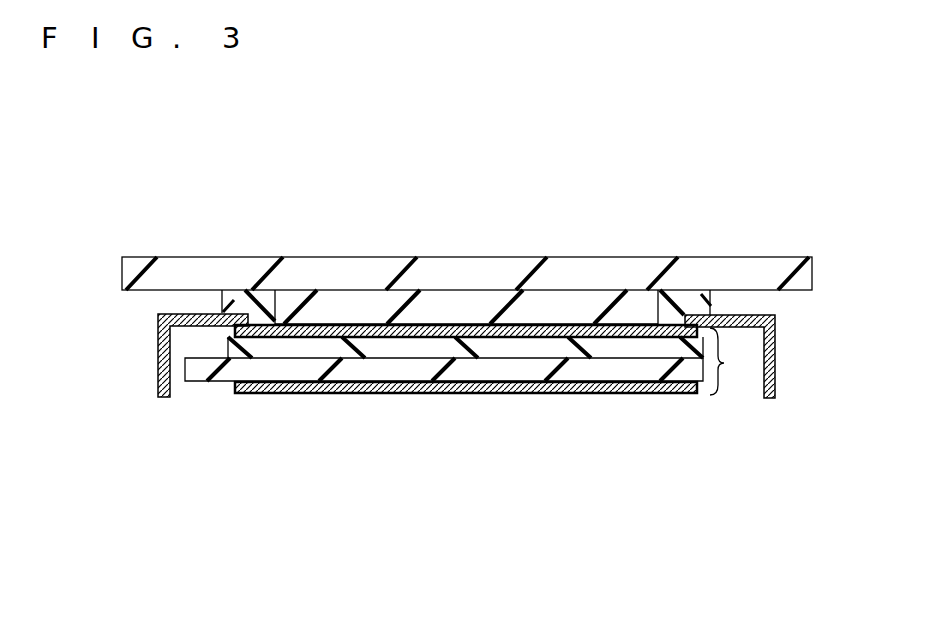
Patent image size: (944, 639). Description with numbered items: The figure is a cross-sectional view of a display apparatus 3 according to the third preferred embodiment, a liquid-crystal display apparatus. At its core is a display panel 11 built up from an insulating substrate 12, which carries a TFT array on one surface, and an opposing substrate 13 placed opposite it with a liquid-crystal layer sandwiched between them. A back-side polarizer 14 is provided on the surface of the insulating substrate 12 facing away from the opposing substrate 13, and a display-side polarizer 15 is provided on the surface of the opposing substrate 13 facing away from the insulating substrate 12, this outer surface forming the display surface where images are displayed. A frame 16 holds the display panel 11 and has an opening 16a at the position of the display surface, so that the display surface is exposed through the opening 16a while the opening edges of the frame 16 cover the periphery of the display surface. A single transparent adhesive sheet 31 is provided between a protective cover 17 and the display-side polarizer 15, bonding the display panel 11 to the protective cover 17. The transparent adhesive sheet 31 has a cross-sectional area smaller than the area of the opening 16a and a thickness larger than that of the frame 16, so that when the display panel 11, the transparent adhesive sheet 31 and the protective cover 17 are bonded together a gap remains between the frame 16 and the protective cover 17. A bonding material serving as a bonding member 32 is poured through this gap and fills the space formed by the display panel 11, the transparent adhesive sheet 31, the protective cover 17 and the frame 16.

The display apparatus 3 is at (461, 163).
The display panel 11 is at (736, 361).
The insulating substrate 12 is at (518, 370).
The opposing substrate 13 is at (400, 347).
The back-side polarizer 14 is at (652, 393).
The display-side polarizer 15 is at (307, 337).
The frame 16 is at (158, 370).
The opening 16a is at (265, 303).
The protective cover 17 is at (618, 277).
The transparent adhesive sheet 31 is at (444, 310).
The bonding member 32 is at (228, 298).